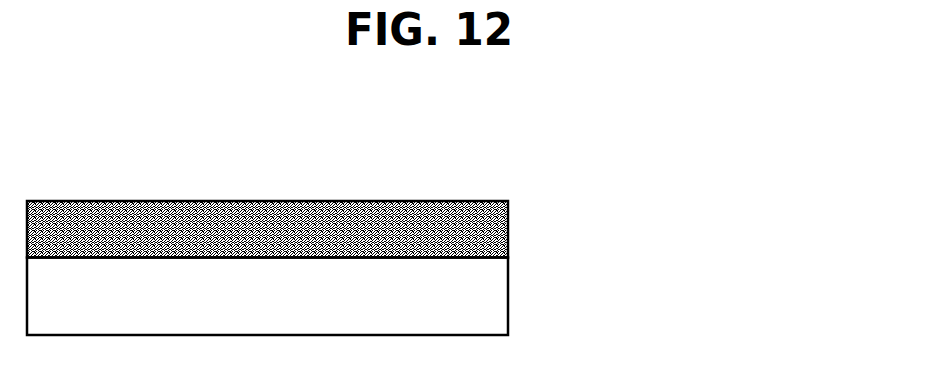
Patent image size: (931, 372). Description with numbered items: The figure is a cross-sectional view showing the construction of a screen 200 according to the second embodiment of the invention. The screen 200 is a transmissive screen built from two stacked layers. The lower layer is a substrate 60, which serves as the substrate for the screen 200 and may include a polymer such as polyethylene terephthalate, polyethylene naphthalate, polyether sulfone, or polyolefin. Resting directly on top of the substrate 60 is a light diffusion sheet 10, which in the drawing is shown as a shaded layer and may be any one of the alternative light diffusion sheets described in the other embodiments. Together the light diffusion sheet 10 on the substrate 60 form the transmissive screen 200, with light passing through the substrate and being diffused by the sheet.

The screen 200 is at (430, 202).
The light diffusion sheet 10 is at (497, 229).
The substrate 60 is at (500, 307).